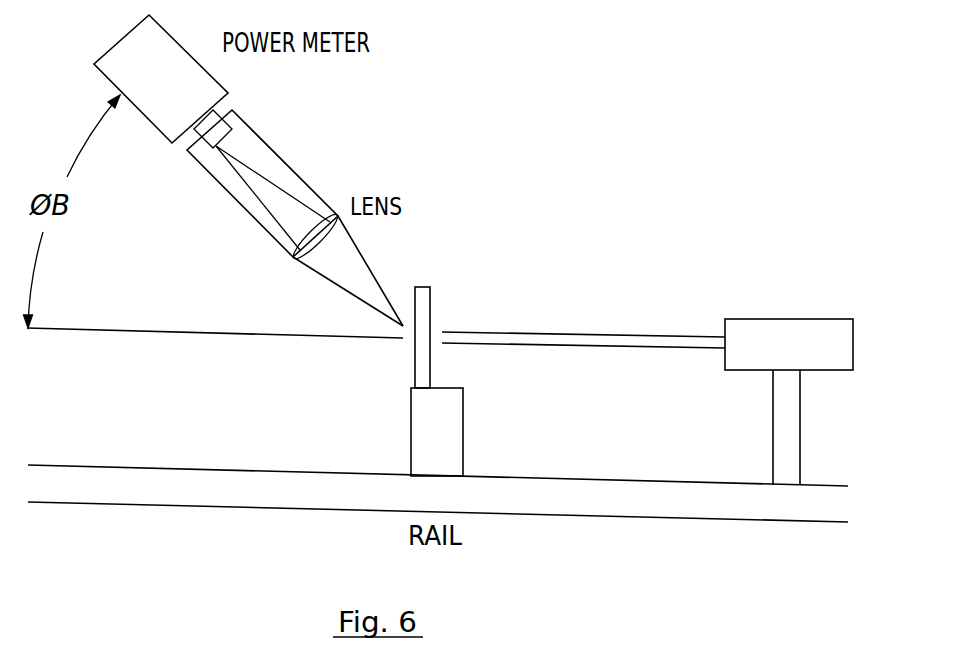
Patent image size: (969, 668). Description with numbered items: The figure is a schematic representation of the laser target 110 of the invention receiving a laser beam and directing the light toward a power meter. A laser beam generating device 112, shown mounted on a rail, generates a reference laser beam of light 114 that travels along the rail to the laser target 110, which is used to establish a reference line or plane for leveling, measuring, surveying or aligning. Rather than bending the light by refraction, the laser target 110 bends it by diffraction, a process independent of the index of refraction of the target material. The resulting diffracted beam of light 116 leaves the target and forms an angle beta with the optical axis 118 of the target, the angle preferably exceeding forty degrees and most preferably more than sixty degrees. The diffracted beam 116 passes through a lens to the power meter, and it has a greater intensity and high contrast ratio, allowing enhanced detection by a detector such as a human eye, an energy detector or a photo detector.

The laser target 110 is at (456, 295).
The laser beam generating device 112 is at (744, 281).
The reference laser beam of light 114 is at (568, 332).
The diffracted beam of light 116 is at (360, 268).
The optical axis 118 is at (143, 328).